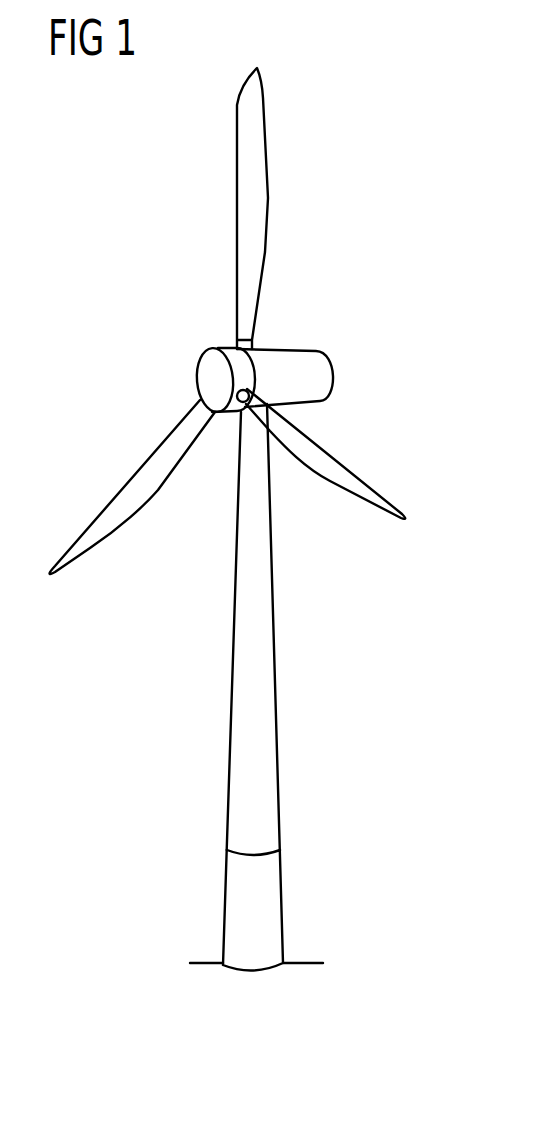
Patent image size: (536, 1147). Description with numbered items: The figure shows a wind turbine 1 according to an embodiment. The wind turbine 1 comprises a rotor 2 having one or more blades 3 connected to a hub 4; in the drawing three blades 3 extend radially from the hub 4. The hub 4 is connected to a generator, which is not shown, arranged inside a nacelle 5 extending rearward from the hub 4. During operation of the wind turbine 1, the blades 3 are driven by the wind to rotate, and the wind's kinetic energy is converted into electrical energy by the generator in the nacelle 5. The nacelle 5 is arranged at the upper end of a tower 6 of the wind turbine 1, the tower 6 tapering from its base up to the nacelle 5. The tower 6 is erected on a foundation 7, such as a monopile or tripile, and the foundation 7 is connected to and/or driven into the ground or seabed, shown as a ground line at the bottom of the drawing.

The wind turbine 1 is at (397, 207).
The rotor 2 is at (173, 325).
The blades 3 is at (255, 192).
The hub 4 is at (208, 378).
The nacelle 5 is at (327, 378).
The tower 6 is at (262, 673).
The foundation 7 is at (268, 905).